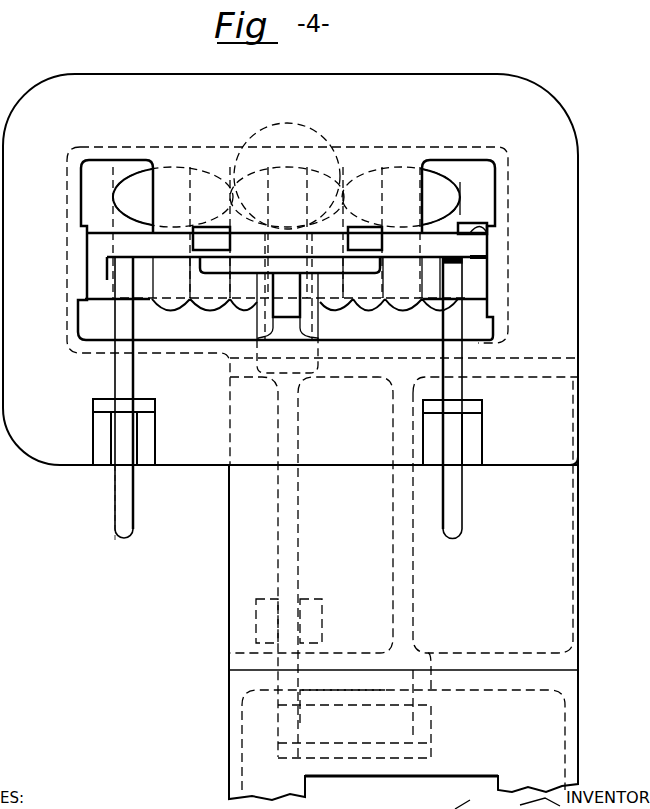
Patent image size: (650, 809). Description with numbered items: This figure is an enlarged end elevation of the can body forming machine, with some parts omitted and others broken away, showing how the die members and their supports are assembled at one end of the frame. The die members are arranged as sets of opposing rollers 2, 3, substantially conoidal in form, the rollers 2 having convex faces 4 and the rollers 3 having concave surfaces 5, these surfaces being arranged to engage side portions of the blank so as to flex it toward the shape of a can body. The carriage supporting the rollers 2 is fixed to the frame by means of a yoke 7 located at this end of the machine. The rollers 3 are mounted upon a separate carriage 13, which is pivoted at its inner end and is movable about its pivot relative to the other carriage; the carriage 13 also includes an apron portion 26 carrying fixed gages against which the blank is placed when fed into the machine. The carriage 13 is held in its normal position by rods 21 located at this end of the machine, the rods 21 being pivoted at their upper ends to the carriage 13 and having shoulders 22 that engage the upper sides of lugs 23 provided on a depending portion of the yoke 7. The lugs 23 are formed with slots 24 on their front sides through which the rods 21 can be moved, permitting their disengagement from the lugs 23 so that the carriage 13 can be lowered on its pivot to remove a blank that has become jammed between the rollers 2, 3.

The yoke 7 is at (570, 143).
The rollers 2 is at (124, 180).
The convex faces 4 is at (445, 181).
The apron portion 26 is at (472, 233).
The carriage 13 is at (477, 247).
The rollers 3 is at (197, 300).
The concave surfaces 5 is at (358, 305).
The rods 21 is at (120, 495).
The shoulders 22 is at (107, 405).
The lugs 23 is at (100, 430).
The slots 24 is at (128, 451).